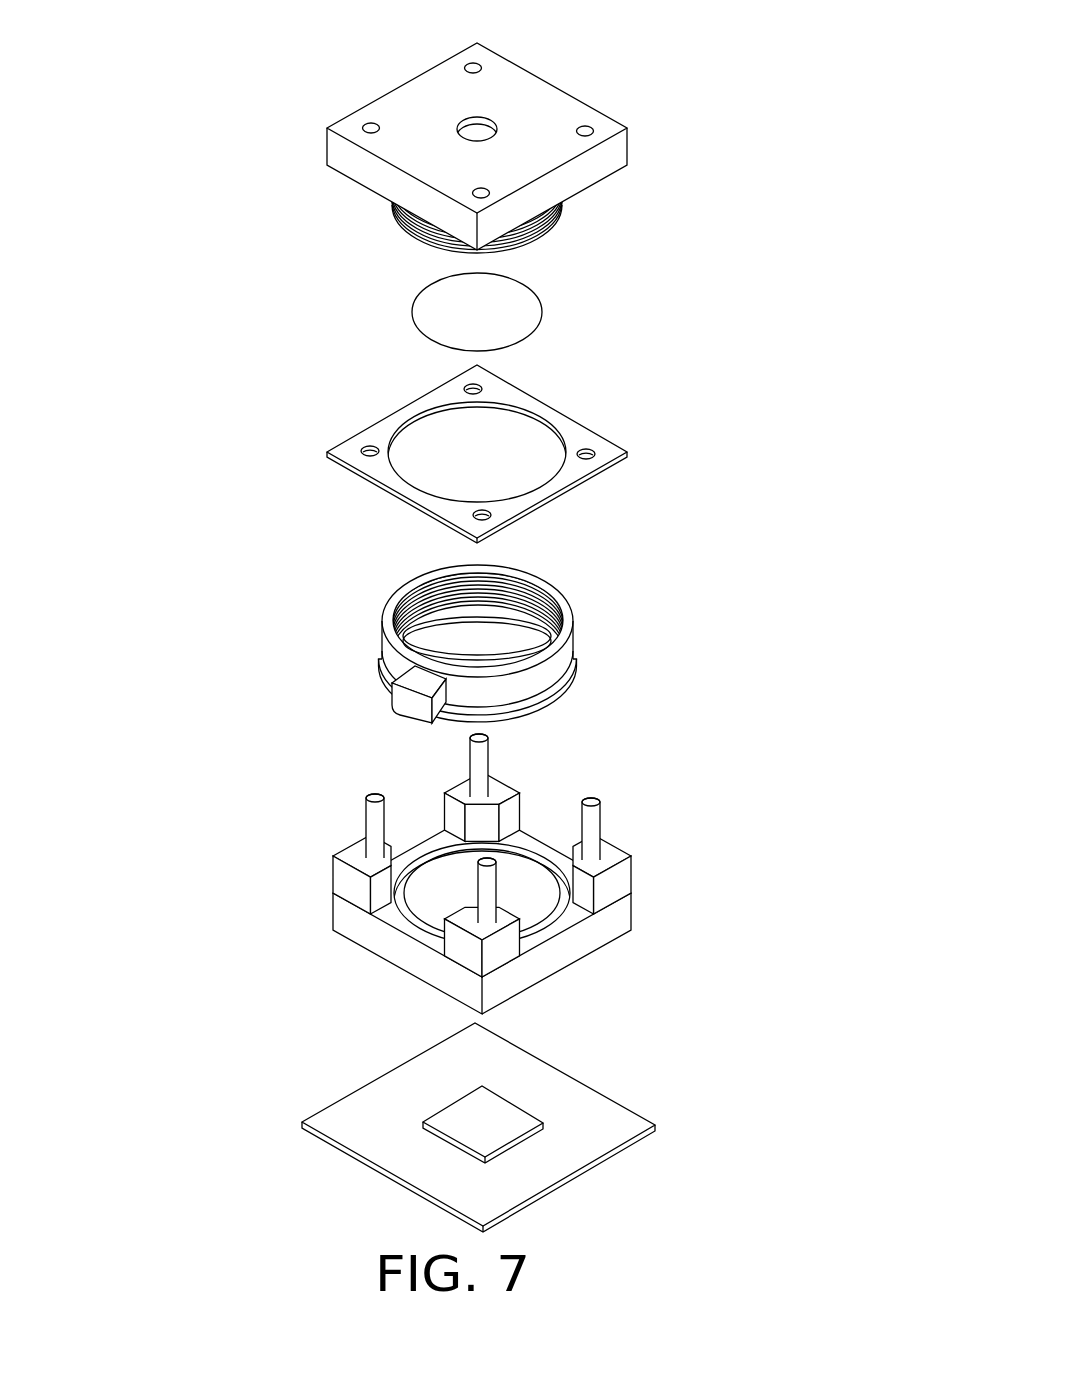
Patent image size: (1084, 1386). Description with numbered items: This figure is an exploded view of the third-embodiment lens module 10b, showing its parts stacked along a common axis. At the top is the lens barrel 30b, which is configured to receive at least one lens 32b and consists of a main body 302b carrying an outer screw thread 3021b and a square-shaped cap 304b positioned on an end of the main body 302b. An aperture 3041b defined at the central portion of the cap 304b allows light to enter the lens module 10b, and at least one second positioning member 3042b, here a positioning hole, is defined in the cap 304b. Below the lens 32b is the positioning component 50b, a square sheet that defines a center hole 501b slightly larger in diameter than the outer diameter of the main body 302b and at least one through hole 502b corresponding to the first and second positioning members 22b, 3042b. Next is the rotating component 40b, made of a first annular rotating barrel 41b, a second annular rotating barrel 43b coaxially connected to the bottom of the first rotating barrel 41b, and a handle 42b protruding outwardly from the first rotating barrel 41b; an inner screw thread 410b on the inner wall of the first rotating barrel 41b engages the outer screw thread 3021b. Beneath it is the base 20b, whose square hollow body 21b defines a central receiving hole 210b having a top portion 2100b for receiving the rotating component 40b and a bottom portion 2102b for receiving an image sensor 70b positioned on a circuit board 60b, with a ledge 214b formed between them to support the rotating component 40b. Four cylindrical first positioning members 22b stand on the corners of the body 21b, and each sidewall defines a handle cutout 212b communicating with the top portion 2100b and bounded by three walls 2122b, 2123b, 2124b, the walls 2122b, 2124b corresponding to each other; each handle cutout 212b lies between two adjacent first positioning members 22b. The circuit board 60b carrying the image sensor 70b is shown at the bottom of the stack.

The lens module 10b is at (486, 33).
The lens barrel 30b is at (494, 151).
The cap 304b is at (607, 157).
The aperture 3041b is at (483, 133).
The second positioning member 3042b is at (587, 128).
The main body 302b is at (461, 231).
The outer screw thread 3021b is at (413, 240).
The lens 32b is at (515, 313).
The positioning component 50b is at (477, 443).
The center hole 501b is at (533, 428).
The through hole 502b is at (585, 455).
The rotating component 40b is at (461, 631).
The inner screw thread 410b is at (535, 585).
The first annular rotating barrel 41b is at (548, 673).
The handle 42b is at (364, 694).
The second annular rotating barrel 43b is at (532, 712).
The base 20b is at (493, 869).
The hollow body 21b is at (488, 884).
The ledge 214b is at (487, 842).
The receiving hole 210b is at (322, 868).
The top portion 2100b is at (473, 823).
The bottom portion 2102b is at (400, 880).
The handle cutout 212b is at (671, 924).
The wall 2122b is at (587, 887).
The wall 2123b is at (590, 940).
The wall 2124b is at (562, 927).
The first positioning member 22b is at (480, 758).
The circuit board 60b is at (520, 1127).
The image sensor 70b is at (480, 1120).